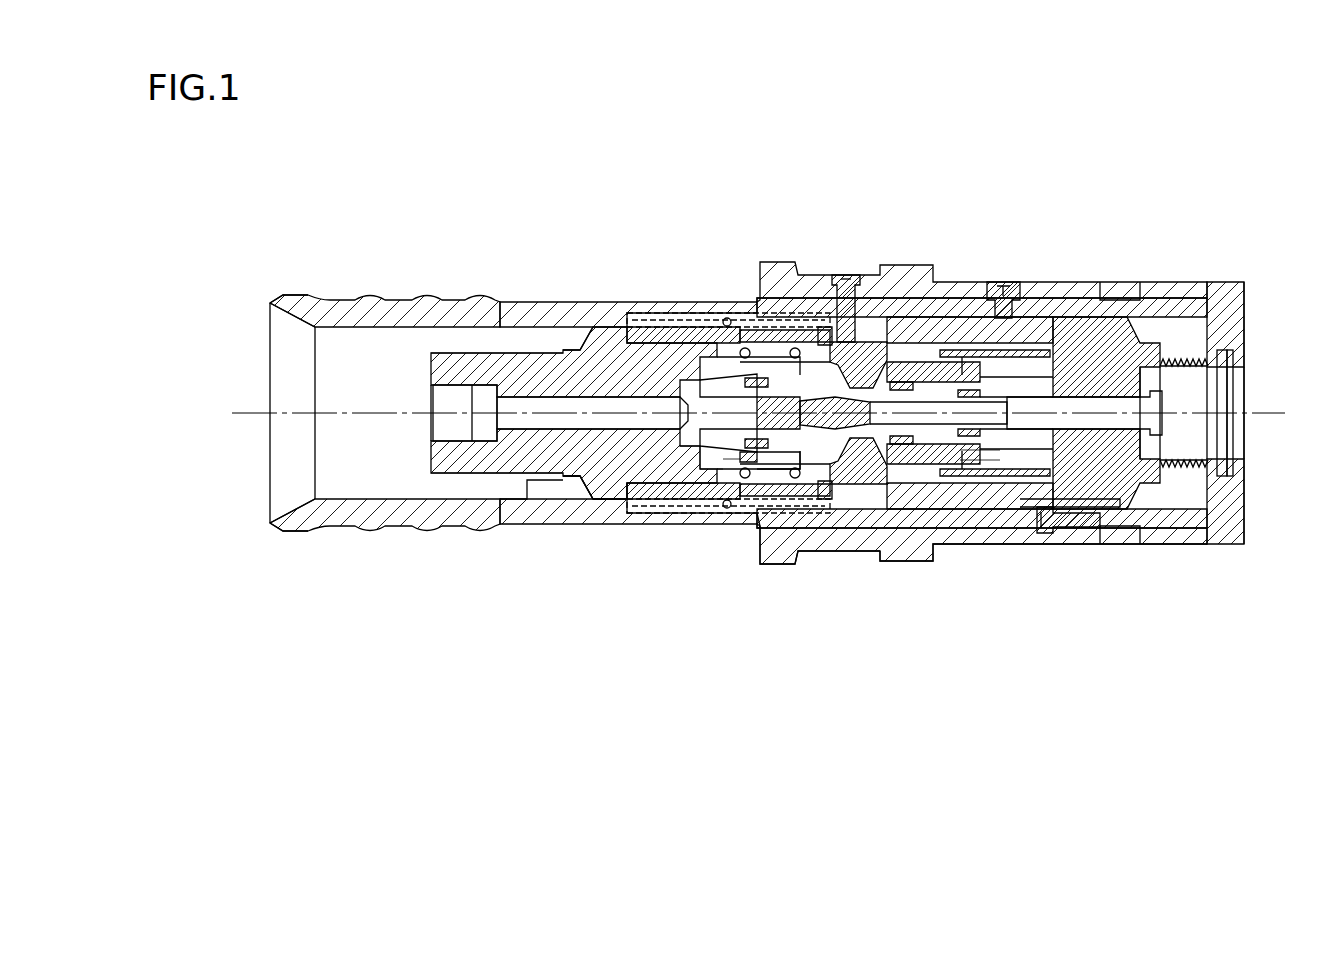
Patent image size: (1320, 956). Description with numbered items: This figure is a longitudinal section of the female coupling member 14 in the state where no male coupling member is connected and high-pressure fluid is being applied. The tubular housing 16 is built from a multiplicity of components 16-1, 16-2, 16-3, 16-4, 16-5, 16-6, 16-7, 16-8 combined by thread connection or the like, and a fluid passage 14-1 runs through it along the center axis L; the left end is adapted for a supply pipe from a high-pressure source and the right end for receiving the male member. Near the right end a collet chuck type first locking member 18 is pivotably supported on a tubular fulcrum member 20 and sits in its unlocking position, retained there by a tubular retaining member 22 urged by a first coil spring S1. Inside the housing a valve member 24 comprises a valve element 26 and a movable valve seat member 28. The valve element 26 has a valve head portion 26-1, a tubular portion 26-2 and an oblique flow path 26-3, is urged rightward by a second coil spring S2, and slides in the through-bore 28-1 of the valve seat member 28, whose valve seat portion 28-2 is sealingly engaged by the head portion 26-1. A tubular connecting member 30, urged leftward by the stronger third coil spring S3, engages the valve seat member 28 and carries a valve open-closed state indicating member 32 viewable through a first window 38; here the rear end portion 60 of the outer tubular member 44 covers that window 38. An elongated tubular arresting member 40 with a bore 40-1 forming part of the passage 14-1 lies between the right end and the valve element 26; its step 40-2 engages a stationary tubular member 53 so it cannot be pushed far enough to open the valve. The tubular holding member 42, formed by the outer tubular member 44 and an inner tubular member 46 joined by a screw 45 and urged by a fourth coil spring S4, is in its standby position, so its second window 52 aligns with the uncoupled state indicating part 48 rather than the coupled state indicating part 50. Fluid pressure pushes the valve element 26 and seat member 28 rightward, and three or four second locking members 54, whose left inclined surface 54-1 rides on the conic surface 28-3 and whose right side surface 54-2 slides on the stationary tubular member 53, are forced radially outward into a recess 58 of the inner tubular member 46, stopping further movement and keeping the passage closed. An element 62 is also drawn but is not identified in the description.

The center axis L is at (247, 413).
The female coupling member 14 is at (488, 231).
The fluid passage 14-1 is at (358, 531).
The tubular housing 16 is at (420, 262).
The housing component 16-1 is at (292, 306).
The housing component 16-2 is at (440, 355).
The housing component 16-3 is at (517, 301).
The housing component 16-4 is at (600, 322).
The housing component 16-5 is at (1150, 345).
The housing component 16-6 is at (1050, 285).
The housing component 16-7 is at (1110, 285).
The housing component 16-8 is at (1238, 290).
The first locking member 18 is at (1125, 435).
The fulcrum member 20 is at (1062, 536).
The retaining member 22 is at (1000, 450).
The valve member 24 is at (810, 478).
The valve element 26 is at (630, 636).
The valve head portion 26-1 is at (632, 478).
The tubular portion 26-2 is at (550, 500).
The flow path 26-3 is at (580, 482).
The movable valve seat member 28 is at (857, 490).
The through-bore 28-1 is at (510, 455).
The valve seat portion 28-2 is at (800, 502).
The conic surface 28-3 is at (828, 330).
The connecting member 30 is at (748, 458).
The valve open-closed state indicating member 32 is at (665, 318).
The first window 38 is at (690, 333).
The arresting member 40 is at (1180, 500).
The bore 40-1 is at (1240, 520).
The step 40-2 is at (1042, 525).
The holding member 42 is at (1022, 190).
The outer tubular member 44 is at (940, 275).
The screw 45 is at (848, 276).
The inner tubular member 46 is at (1003, 281).
The uncoupled state indicating part 48 is at (762, 398).
The coupled state indicating part 50 is at (812, 400).
The second window 52 is at (730, 350).
The stationary tubular member 53 is at (960, 437).
The second locking members 54 is at (940, 466).
The left inclined surface 54-1 is at (818, 355).
The right side surface 54-2 is at (900, 345).
The recess 58 is at (880, 340).
The rear end portion 60 is at (752, 380).
The guide ring 62 is at (905, 460).
The first coil spring S1 is at (975, 455).
The second coil spring S2 is at (545, 482).
The third coil spring S3 is at (722, 468).
The fourth coil spring S4 is at (690, 482).